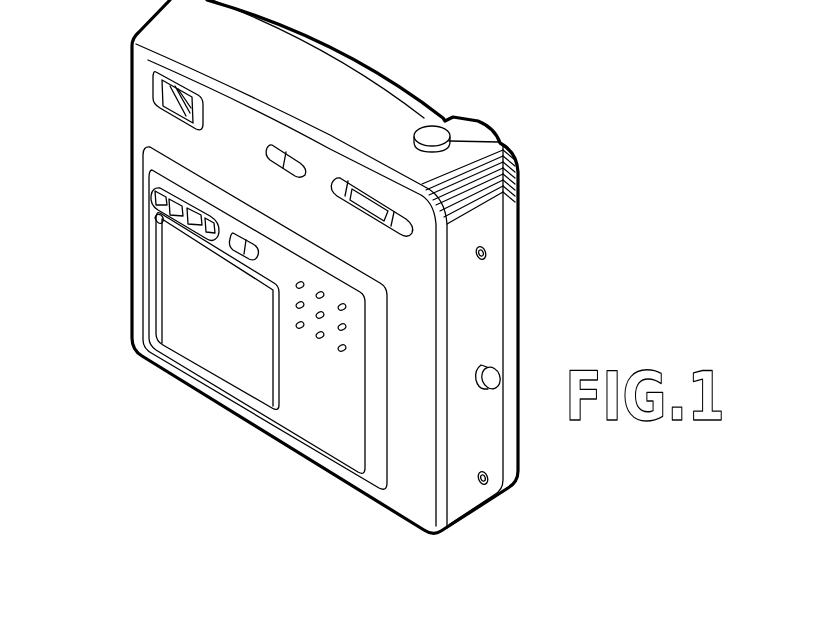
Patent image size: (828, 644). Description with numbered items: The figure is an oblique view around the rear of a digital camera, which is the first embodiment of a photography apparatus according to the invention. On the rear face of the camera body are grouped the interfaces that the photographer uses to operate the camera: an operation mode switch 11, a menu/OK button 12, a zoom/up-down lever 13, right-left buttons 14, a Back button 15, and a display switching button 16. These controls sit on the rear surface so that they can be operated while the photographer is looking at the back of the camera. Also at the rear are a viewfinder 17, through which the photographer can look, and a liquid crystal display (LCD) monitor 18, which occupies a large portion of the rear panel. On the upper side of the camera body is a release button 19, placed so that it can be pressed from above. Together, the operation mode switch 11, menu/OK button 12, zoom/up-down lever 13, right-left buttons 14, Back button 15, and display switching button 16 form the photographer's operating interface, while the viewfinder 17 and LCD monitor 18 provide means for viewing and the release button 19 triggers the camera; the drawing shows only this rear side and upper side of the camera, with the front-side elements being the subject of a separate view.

The operation mode switch 11 is at (237, 254).
The menu/OK button 12 is at (157, 222).
The zoom/up-down lever 13 is at (373, 198).
The right-left buttons 14 is at (348, 186).
The Back button 15 is at (193, 228).
The display switching button 16 is at (153, 197).
The viewfinder 17 is at (152, 88).
The liquid crystal display (LCD) monitor 18 is at (182, 323).
The release button 19 is at (432, 137).